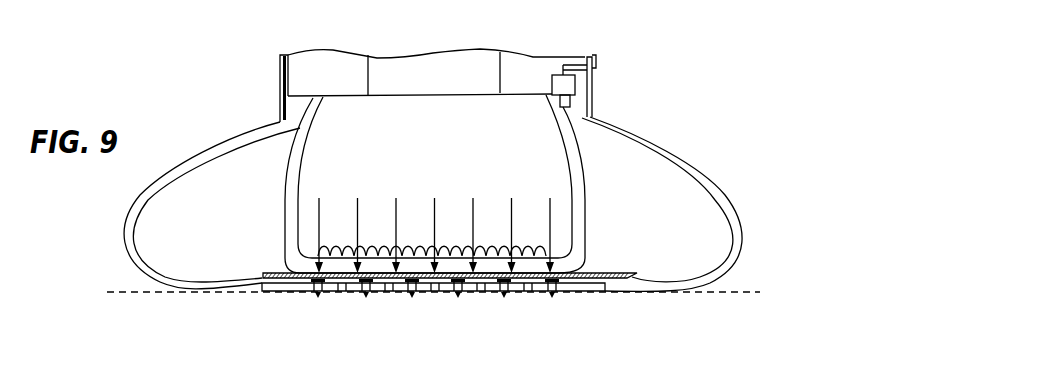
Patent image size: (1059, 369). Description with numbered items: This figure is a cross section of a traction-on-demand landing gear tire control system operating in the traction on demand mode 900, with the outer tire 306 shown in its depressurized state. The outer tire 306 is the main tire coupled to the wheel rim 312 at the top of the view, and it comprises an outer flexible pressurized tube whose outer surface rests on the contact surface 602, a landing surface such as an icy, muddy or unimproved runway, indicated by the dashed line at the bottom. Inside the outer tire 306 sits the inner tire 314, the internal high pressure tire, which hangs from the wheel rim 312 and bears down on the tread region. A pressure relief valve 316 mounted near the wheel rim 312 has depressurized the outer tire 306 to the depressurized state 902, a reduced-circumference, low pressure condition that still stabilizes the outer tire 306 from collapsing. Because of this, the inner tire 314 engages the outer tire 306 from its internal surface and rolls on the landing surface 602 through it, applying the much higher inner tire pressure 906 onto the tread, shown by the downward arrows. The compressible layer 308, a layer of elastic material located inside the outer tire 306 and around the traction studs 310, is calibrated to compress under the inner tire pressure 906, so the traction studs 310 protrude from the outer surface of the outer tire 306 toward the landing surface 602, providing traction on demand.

The traction on demand mode 900 is at (753, 75).
The wheel rim 312 is at (343, 94).
The inner tire 314 is at (300, 150).
The pressure relief valve 316 is at (560, 92).
The outer tire 306 is at (700, 163).
The pressure P2 906 is at (497, 160).
The depressurized state P3 902 is at (695, 236).
The contact surface 602 is at (758, 291).
The compressible layer 308 is at (596, 284).
The traction stud 310 is at (318, 297).